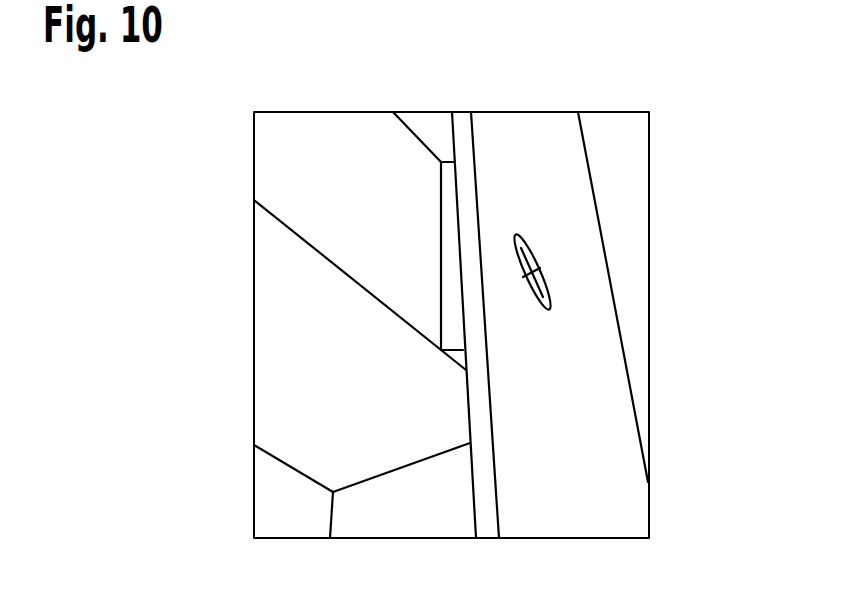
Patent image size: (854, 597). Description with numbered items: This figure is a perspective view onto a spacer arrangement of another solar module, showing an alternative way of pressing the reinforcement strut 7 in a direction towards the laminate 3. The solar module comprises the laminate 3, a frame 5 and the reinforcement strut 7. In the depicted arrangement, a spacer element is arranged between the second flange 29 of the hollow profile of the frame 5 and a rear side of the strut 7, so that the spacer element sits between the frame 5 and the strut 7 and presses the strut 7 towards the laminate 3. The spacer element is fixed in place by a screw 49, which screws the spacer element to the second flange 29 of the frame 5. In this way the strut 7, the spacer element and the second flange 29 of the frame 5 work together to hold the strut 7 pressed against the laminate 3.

The reinforcement strut 7 is at (338, 127).
The second flange 29 is at (548, 417).
The frame 5 is at (530, 127).
The screw 49 is at (531, 260).
The laminate 3 is at (275, 511).